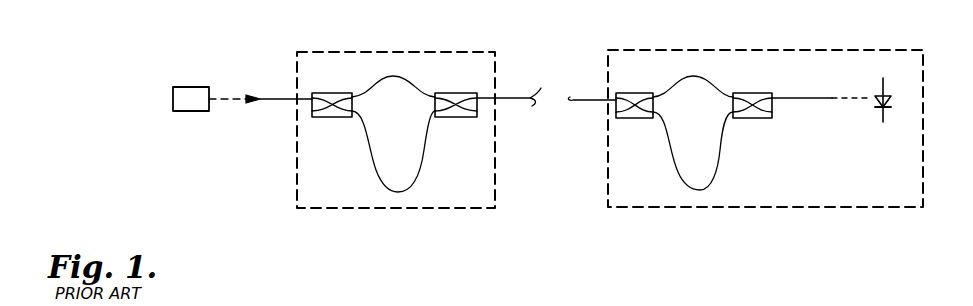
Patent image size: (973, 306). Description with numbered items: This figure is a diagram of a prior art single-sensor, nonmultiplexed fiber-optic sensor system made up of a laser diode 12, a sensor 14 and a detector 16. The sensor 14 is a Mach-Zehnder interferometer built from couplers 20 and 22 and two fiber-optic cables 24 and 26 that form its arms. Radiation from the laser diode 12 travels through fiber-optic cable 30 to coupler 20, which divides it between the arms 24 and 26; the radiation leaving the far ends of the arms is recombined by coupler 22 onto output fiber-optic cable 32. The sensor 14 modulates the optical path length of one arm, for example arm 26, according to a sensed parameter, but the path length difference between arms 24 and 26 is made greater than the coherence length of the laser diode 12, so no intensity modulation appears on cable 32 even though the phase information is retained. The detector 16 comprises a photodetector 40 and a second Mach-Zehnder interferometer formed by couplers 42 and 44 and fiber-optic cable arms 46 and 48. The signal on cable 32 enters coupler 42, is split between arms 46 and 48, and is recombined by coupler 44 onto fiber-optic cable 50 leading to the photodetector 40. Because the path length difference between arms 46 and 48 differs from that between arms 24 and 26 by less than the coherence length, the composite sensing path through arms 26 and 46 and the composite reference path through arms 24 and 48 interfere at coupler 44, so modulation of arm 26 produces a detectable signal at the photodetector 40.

The laser diode 12 is at (193, 88).
The sensor 14 is at (437, 52).
The detector 16 is at (765, 50).
The coupler 20 is at (330, 118).
The coupler 22 is at (457, 118).
The fiber-optic cable 24 is at (378, 87).
The fiber-optic cable 26 is at (373, 167).
The fiber-optic cable 30 is at (275, 100).
The output fiber-optic cable 32 is at (533, 98).
The photodetector 40 is at (875, 95).
The coupler 42 is at (633, 120).
The coupler 44 is at (753, 120).
The fiber-optic cable arm 46 is at (677, 83).
The fiber-optic cable arm 48 is at (717, 160).
The fiber-optic cable 50 is at (793, 97).